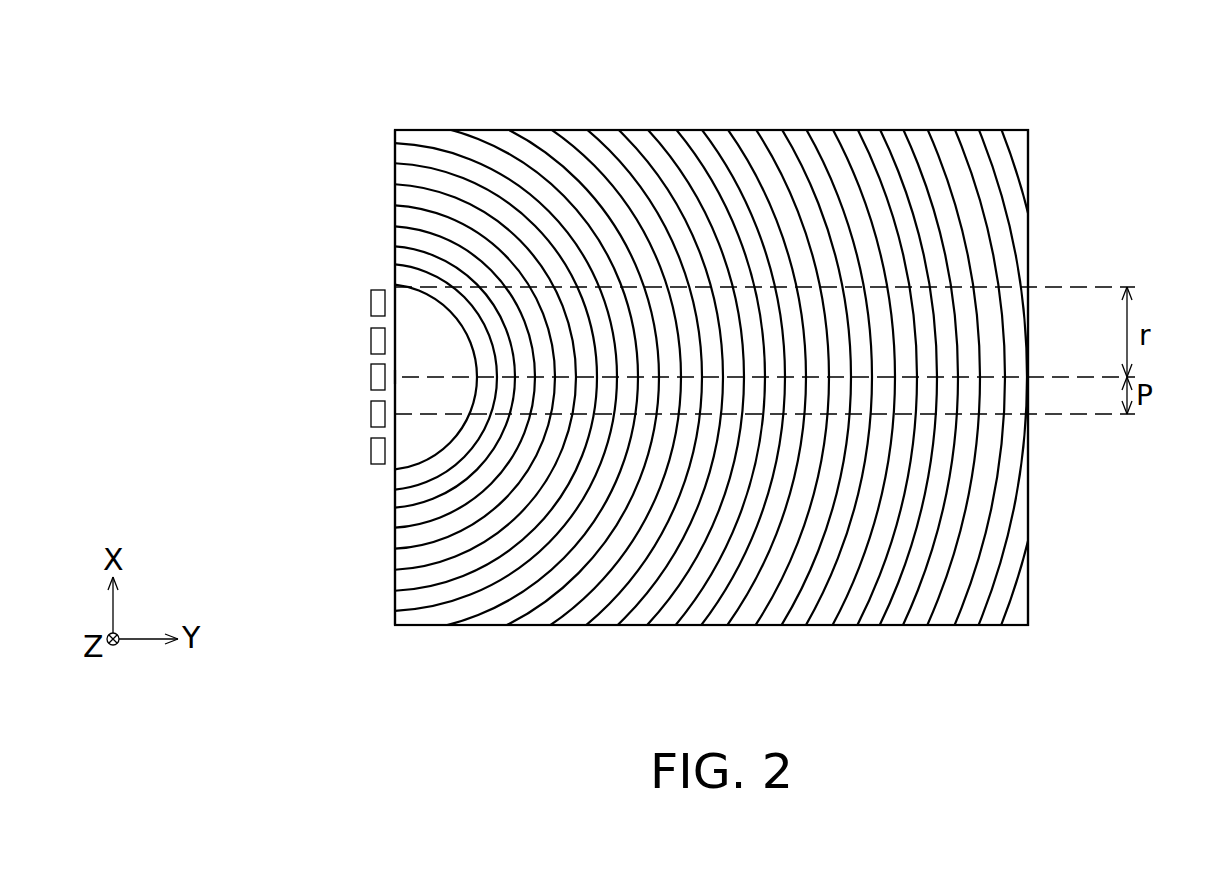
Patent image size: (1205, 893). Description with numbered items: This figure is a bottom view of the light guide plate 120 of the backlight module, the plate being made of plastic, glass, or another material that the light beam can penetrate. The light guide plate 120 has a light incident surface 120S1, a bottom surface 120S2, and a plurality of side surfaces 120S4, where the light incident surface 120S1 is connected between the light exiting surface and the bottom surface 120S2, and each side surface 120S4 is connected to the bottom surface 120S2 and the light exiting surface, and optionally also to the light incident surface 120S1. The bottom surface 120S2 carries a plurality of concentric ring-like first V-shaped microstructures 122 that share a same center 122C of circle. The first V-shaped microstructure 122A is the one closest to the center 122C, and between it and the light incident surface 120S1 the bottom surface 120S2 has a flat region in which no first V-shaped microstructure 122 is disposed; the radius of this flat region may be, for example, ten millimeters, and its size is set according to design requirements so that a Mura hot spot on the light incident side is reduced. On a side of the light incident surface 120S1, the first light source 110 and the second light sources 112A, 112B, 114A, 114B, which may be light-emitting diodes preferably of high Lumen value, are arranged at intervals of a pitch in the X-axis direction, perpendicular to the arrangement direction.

The first light source 110 is at (371, 378).
The second light source 112A is at (371, 414).
The second light source 112B is at (371, 342).
The second light source 114A is at (371, 452).
The second light source 114B is at (371, 303).
The light guide plate 120 is at (1017, 537).
The light incident surface 120S1 is at (395, 172).
The bottom surface 120S2 is at (410, 325).
The side surface 120S4 is at (916, 129).
The first V-shaped microstructure 122 is at (940, 606).
The first V-shaped microstructure 122A is at (443, 455).
The center of circle 122C is at (408, 383).